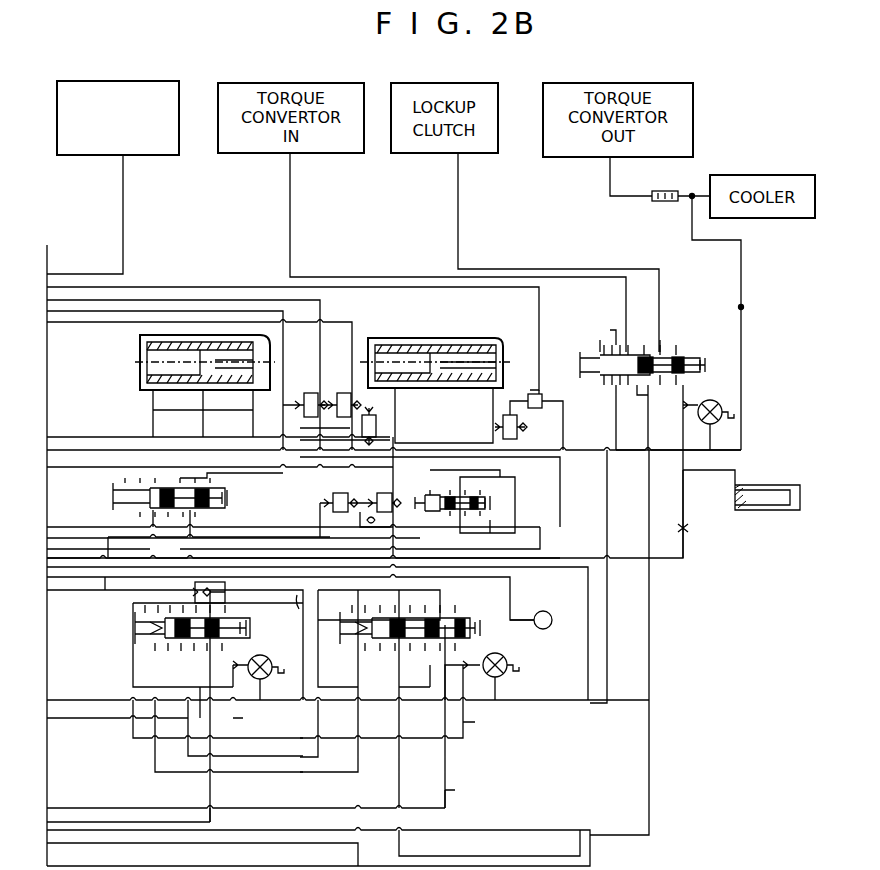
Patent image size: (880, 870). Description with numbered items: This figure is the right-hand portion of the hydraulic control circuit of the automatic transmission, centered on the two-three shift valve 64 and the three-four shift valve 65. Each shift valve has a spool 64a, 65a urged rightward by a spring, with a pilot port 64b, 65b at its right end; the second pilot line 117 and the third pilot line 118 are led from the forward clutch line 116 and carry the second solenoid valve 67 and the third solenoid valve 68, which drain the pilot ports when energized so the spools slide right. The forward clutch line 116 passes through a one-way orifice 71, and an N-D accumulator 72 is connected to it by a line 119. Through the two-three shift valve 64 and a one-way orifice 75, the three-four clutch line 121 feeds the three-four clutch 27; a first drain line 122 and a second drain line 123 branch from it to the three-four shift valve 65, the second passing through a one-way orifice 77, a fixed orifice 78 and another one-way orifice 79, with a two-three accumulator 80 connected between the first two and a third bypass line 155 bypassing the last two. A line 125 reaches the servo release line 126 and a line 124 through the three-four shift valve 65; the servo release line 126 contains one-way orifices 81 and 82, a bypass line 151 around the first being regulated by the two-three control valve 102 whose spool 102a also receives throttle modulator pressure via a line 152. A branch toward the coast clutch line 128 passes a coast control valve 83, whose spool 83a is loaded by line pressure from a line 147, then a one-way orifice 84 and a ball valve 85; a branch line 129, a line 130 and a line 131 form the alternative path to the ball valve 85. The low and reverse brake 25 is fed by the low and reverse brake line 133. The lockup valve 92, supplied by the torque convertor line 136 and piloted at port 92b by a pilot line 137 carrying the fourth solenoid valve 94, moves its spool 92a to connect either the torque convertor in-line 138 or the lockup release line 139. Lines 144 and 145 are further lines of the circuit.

The low and reverse brake 25 is at (166, 80).
The low and reverse brake line 133 is at (123, 226).
The torque convertor in-line 138 is at (290, 226).
The lockup release line 139 is at (458, 226).
The N-D accumulator 72 is at (135, 357).
The one-way orifice 71 is at (302, 391).
The one-way orifice 82 is at (342, 391).
The one-way orifice 77 is at (380, 400).
The 2-3 accumulator 80 is at (455, 340).
The coast clutch line 128 is at (539, 320).
The one-way orifice 84 is at (512, 398).
The ball valve 85 is at (540, 390).
The lockup valve 92 is at (695, 365).
The spool 92a is at (675, 345).
The pilot port 92b is at (687, 388).
The fourth solenoid valve 94 is at (712, 425).
The third bypass line 155 is at (100, 453).
The line 119 is at (200, 423).
The second drain line 123 is at (395, 437).
The 2-3 control valve 102 is at (225, 498).
The spool 102a is at (200, 473).
The bypass line 151 is at (268, 520).
The line 131 is at (230, 548).
The one-way orifice 81 is at (330, 488).
The fixed orifice 78 is at (386, 483).
The one-way orifice 79 is at (374, 523).
The 3-4 clutch 27 is at (476, 492).
The line 147 is at (478, 473).
The coast control valve 83 is at (490, 502).
The spool 83a is at (484, 527).
The torque convertor line 136 is at (605, 478).
The pilot line 137 is at (683, 498).
The line 152 is at (144, 548).
The servo release line 126 is at (400, 538).
The 3-4 clutch line 121 is at (129, 578).
The one-way orifice 75 is at (236, 590).
The first drain line 122 is at (254, 706).
The 2-3 shift valve 64 is at (252, 628).
The spool 64a is at (165, 612).
The pilot port 64b is at (245, 650).
The second solenoid valve 67 is at (264, 677).
The forward clutch line 116 is at (115, 690).
The second pilot line 117 is at (175, 729).
The line 144 is at (212, 788).
The line 130 is at (322, 600).
The 3-4 shift valve 65 is at (482, 628).
The spool 65a is at (450, 612).
The pilot port 65b is at (470, 648).
The third solenoid valve 68 is at (501, 676).
The line 125 is at (550, 580).
The line 124 is at (337, 668).
The branch line 129 is at (431, 682).
The third pilot line 118 is at (404, 754).
The line 145 is at (318, 823).